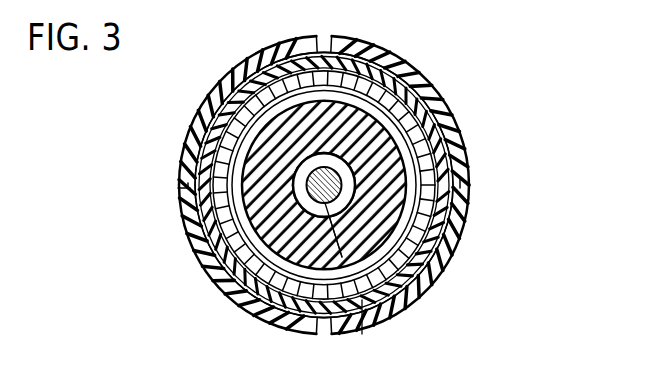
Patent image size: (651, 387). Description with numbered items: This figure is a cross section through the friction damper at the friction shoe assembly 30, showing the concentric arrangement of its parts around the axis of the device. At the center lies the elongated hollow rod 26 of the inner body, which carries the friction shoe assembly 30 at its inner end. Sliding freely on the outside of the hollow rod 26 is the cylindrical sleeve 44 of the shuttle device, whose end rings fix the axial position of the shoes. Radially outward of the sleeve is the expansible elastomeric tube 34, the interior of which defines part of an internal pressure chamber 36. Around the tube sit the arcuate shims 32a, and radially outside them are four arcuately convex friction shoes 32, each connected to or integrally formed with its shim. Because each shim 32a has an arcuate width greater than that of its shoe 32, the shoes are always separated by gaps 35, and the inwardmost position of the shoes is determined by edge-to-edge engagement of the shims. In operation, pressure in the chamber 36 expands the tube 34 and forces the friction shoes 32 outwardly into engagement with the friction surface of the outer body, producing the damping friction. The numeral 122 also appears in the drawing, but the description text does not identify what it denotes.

The friction shoe assembly 30 is at (452, 88).
The friction shoe 32 is at (203, 98).
The arcuate shim 32a is at (362, 334).
The expansible elastomeric tube 34 is at (455, 223).
The internal pressure chamber 36 is at (438, 237).
The cylindrical sleeve 44 is at (293, 98).
The elongated hollow rod 26 is at (262, 213).
The wrap layer 122 is at (392, 293).
The gap 35 is at (187, 183).